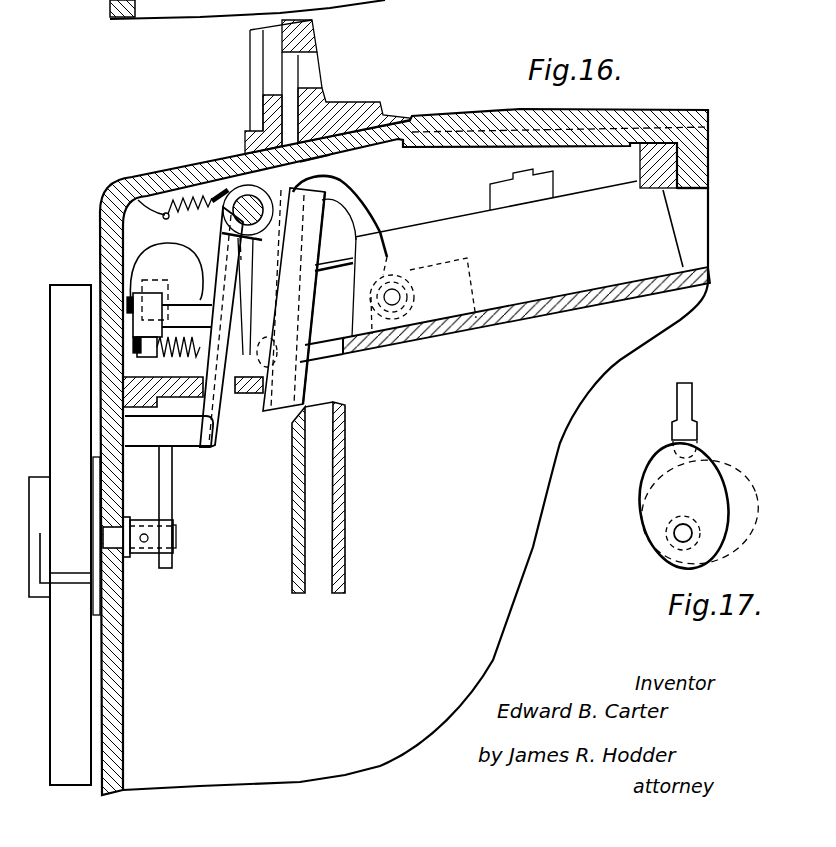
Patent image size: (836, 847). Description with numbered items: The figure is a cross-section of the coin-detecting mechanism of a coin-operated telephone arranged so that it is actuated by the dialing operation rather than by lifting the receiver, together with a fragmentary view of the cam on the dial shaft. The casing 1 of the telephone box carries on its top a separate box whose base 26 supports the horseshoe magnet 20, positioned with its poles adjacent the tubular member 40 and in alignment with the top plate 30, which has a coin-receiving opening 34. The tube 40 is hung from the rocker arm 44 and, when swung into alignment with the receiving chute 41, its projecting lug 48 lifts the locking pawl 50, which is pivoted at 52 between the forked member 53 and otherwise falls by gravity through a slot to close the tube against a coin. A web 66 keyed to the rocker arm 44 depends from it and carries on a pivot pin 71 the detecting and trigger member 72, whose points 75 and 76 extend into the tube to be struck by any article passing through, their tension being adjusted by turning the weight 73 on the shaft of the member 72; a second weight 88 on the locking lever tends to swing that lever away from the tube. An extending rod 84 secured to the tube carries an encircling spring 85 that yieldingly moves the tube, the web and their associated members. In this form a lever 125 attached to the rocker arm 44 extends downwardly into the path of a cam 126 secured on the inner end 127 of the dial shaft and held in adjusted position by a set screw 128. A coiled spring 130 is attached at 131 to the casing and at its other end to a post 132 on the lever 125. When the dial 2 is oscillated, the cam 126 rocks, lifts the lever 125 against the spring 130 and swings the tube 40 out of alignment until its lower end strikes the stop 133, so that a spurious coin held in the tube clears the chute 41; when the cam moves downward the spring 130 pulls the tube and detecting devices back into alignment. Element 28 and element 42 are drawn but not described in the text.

In FIG. 16, the casing 1 is at (106, 228).
In FIG. 16, the dial 2 is at (59, 285).
In FIG. 16, the horseshoe magnet 20 is at (585, 198).
In FIG. 16, the base 26 is at (551, 298).
In FIG. 16, the top wall inner surface 28 is at (304, 163).
In FIG. 16, the top plate 30 is at (314, 42).
In FIG. 16, the coin-receiving opening 34 is at (262, 67).
In FIG. 16, the tubular member 40 is at (305, 390).
In FIG. 16, the receiving chute 41 is at (338, 545).
In FIG. 16, the plate flange 42 is at (338, 355).
In FIG. 16, the rocker arm 44 is at (245, 197).
In FIG. 16, the projecting lug 48 is at (330, 273).
In FIG. 16, the locking pawl 50 is at (361, 210).
In FIG. 16, the pivot 52 is at (397, 292).
In FIG. 16, the forked member 53 is at (467, 258).
In FIG. 16, the web 66 is at (230, 237).
In FIG. 16, the pivot pin 71 is at (200, 415).
In FIG. 16, the detecting and trigger member 72 is at (180, 307).
In FIG. 16, the weight 73 is at (135, 250).
In FIG. 16, the point 75 is at (262, 307).
In FIG. 16, the point 76 is at (274, 355).
In FIG. 16, the extending rod 84 is at (145, 357).
In FIG. 16, the spring 85 is at (158, 394).
In FIG. 16, the weight 88 is at (165, 255).
In FIG. 16, the lever 125 is at (208, 447).
In FIG. 17, the lever 125 is at (688, 395).
In FIG. 16, the cam 126 is at (163, 490).
In FIG. 17, the cam 126 is at (657, 486).
In FIG. 16, the inner end of shaft 127 is at (176, 537).
In FIG. 17, the inner end of shaft 127 is at (681, 537).
In FIG. 16, the set screw 128 is at (145, 542).
In FIG. 16, the coiled spring 130 is at (170, 210).
In FIG. 16, the spring attachment point 131 is at (122, 186).
In FIG. 16, the post 132 is at (214, 192).
In FIG. 16, the stop 133 is at (248, 394).